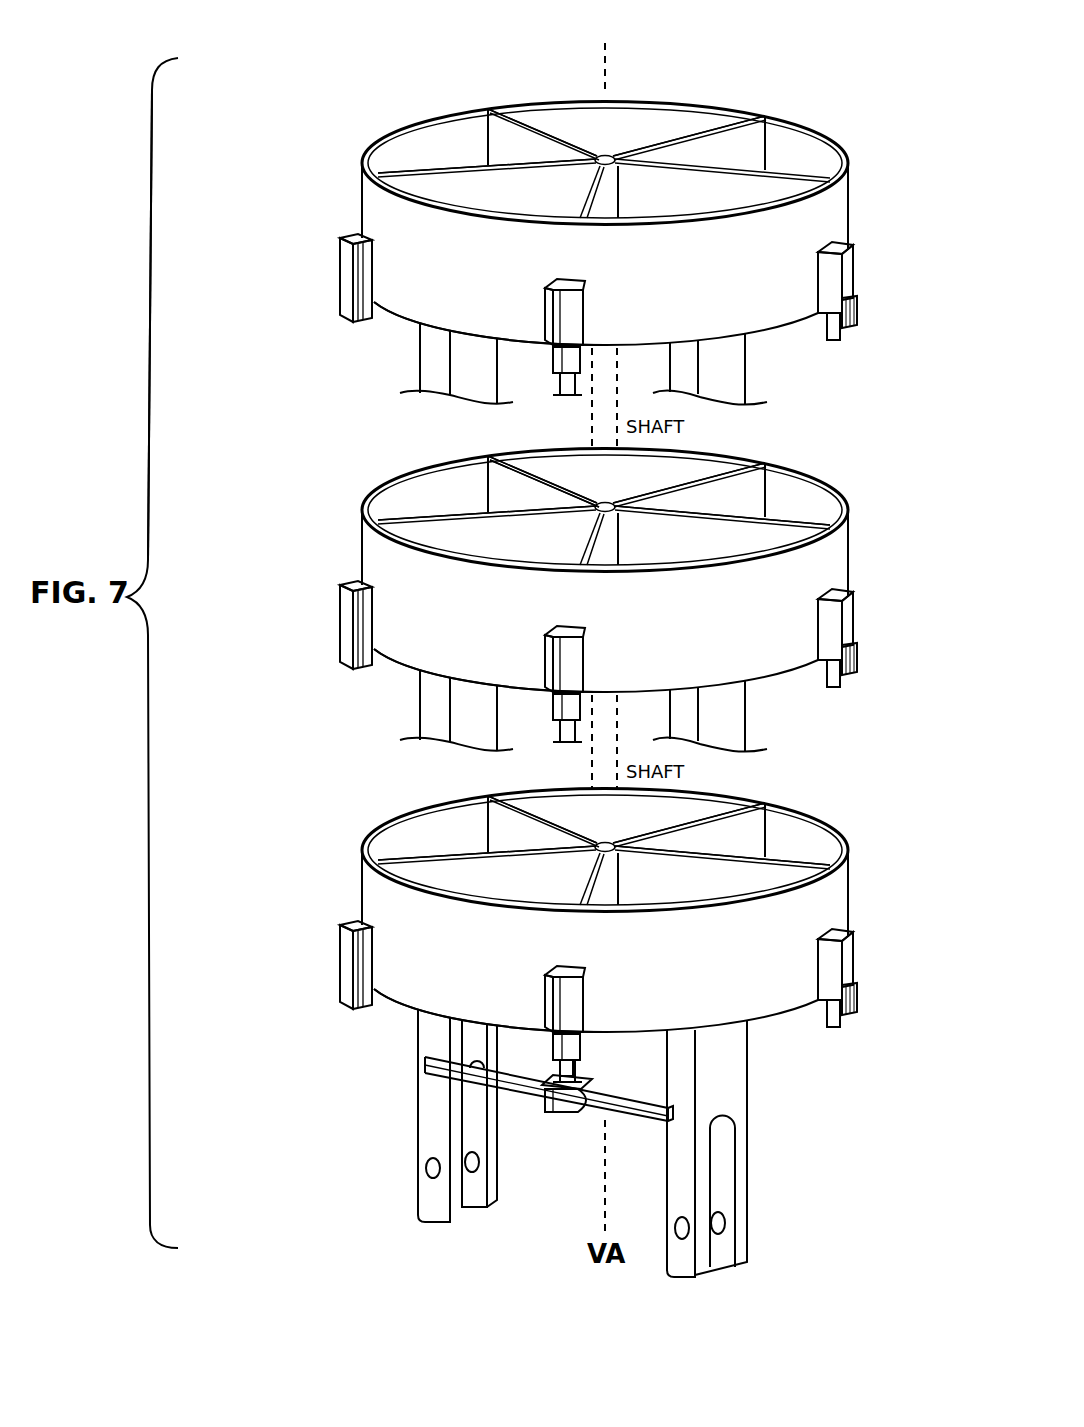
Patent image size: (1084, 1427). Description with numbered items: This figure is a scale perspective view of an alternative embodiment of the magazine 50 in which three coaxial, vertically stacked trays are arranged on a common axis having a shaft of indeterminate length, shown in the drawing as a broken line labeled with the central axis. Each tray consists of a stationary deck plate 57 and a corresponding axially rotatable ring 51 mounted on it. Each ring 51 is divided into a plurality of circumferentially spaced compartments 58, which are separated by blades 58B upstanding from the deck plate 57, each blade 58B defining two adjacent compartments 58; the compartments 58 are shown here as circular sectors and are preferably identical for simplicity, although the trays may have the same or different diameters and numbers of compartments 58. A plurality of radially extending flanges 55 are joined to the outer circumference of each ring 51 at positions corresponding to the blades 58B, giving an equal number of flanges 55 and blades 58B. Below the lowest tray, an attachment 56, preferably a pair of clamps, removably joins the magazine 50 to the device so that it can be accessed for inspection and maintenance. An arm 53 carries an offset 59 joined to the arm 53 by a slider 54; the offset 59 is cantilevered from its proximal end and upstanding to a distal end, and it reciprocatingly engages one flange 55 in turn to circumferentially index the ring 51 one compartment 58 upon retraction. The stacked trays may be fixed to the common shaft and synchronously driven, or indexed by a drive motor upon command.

The magazine 50 is at (180, 630).
The ring 51 is at (640, 290).
The arm 53 is at (507, 1085).
The slider 54 is at (563, 1097).
The flange 55 is at (347, 267).
The attachment 56 is at (437, 1122).
The deck plate 57 is at (402, 318).
The compartment 58 is at (445, 147).
The blade 58B is at (527, 145).
The offset 59 is at (557, 1067).